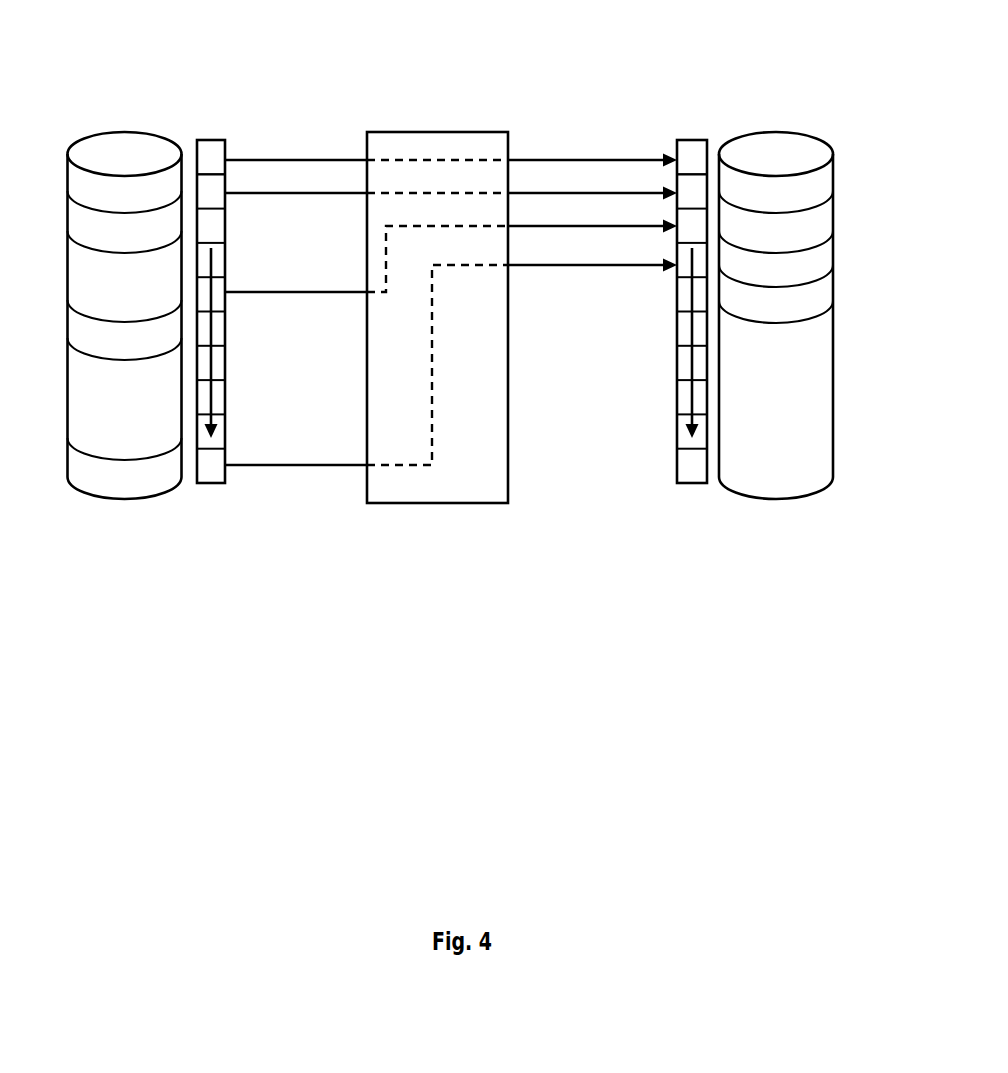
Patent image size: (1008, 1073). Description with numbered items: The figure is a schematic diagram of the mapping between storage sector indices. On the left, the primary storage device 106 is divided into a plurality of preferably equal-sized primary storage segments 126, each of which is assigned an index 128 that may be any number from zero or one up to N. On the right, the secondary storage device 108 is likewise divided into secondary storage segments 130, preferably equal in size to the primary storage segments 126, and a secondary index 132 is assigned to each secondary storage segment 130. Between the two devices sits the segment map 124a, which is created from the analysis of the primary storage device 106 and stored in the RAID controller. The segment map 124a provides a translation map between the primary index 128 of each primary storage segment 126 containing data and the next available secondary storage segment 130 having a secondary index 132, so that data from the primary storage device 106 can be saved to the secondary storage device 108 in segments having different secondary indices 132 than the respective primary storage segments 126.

The primary storage device 106 is at (127, 130).
The primary storage segment 126 is at (211, 139).
The index 128 is at (221, 157).
The segment map 124a is at (443, 131).
The secondary storage segment 130 is at (676, 152).
The secondary index 132 is at (700, 148).
The secondary storage device 108 is at (807, 132).